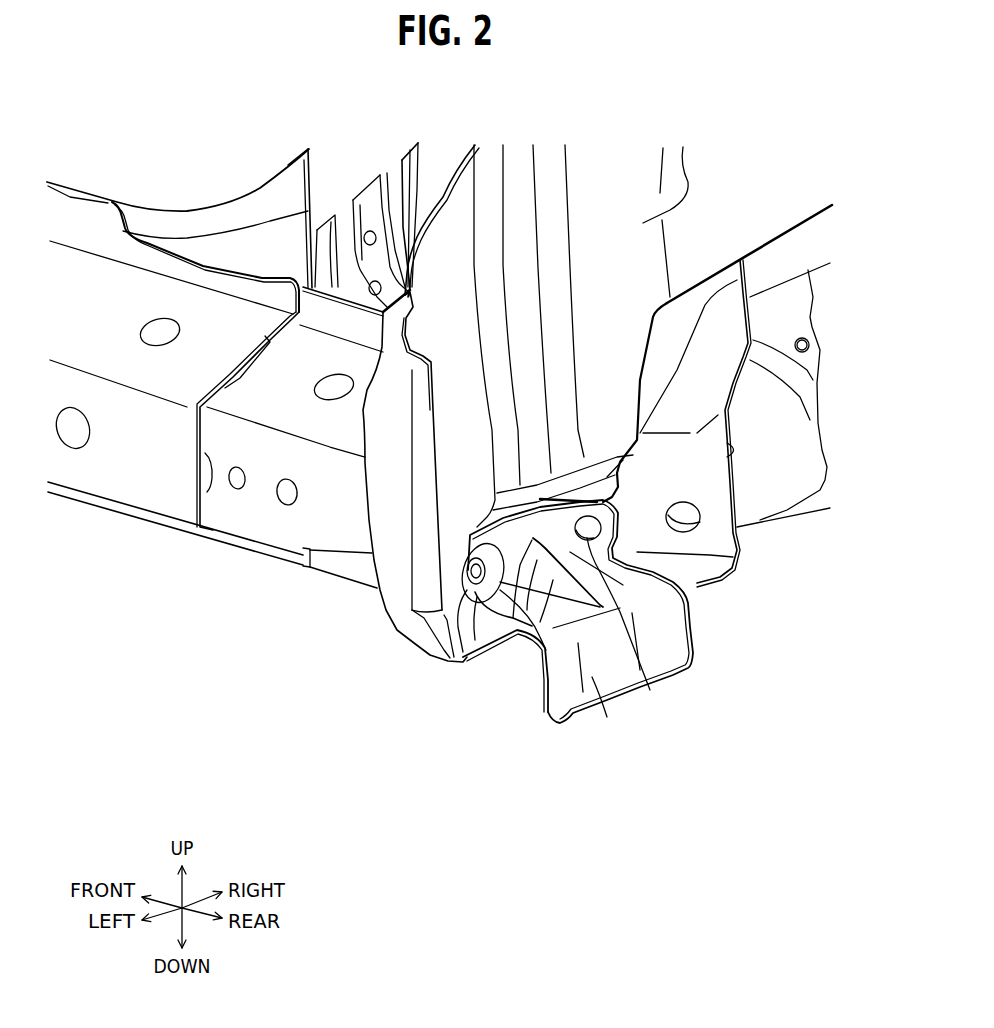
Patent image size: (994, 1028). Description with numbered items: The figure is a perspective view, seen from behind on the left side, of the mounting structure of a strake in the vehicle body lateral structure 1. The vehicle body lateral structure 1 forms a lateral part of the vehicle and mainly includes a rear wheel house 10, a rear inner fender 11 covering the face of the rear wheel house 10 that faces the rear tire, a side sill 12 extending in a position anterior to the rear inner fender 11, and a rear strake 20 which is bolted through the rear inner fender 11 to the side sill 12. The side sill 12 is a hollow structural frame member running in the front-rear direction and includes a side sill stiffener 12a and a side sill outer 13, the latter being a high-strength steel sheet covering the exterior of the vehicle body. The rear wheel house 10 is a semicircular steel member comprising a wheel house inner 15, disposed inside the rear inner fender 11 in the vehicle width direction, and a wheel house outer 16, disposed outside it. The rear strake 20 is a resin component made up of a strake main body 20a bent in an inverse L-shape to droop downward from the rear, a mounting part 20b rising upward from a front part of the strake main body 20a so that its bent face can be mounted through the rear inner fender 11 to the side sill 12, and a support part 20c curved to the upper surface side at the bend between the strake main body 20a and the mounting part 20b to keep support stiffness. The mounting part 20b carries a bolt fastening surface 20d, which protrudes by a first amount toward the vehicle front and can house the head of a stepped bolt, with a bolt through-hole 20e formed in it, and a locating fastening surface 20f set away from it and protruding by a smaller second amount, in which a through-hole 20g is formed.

The vehicle body lateral structure 1 is at (577, 113).
The rear inner fender 11 is at (683, 150).
The side sill 12 is at (215, 454).
The side sill stiffener 12a is at (248, 459).
The side sill outer 13 is at (128, 480).
The wheel house outer 16 is at (398, 600).
The rear strake 20 is at (556, 680).
The strake main body 20a is at (607, 690).
The mounting part 20b is at (543, 637).
The support part 20c is at (566, 723).
The bolt fastening surface 20d is at (507, 585).
The bolt through-hole 20e is at (463, 645).
The locating fastening surface 20f is at (613, 690).
The through-hole 20g is at (638, 637).
The wheel house inner 15 is at (717, 527).
The rear wheel house 10 is at (740, 745).